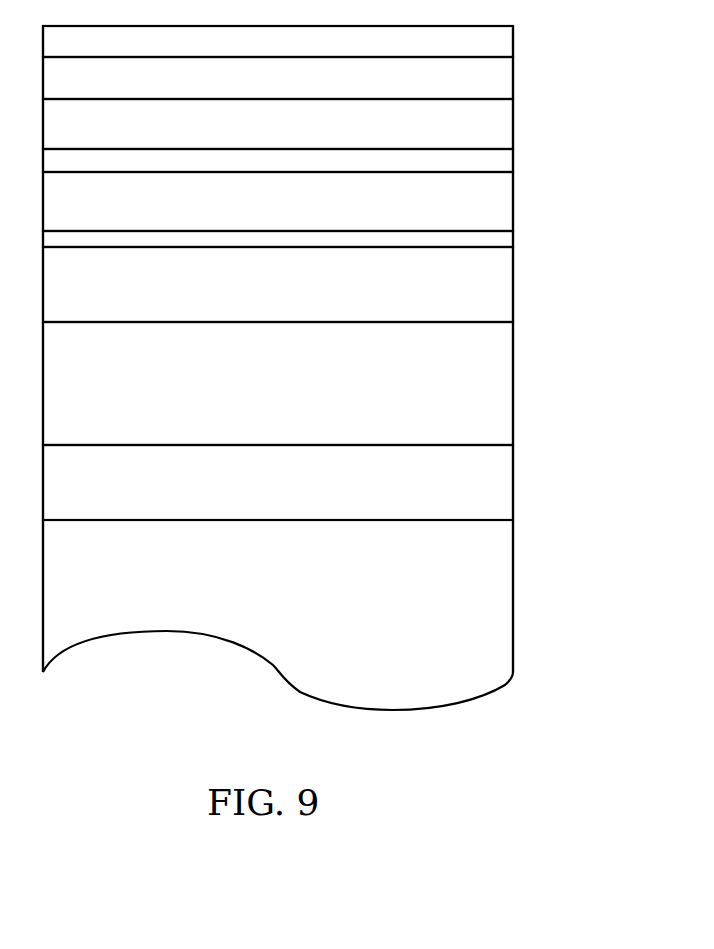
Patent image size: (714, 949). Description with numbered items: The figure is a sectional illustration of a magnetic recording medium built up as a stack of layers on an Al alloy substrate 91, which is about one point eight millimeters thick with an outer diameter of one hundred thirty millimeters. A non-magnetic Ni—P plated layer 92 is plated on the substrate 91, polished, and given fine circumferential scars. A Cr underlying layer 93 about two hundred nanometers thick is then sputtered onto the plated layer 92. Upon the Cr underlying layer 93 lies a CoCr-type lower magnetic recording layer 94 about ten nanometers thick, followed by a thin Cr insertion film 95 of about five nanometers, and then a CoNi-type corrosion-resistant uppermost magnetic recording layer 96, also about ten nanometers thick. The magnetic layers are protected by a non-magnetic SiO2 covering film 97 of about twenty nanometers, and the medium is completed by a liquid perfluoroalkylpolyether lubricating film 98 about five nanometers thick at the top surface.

The Al alloy substrate 91 is at (513, 603).
The Ni—P plated layer 92 is at (513, 491).
The Cr underlying layer 93 is at (513, 368).
The CoCr-type magnetic film 94 is at (513, 193).
The Cr insertion film 95 is at (513, 157).
The CoNi-type corrosion-resistant uppermost magnetic recording layer 96 is at (513, 133).
The non-magnetic covering film 97 is at (513, 72).
The lubricating film 98 is at (513, 42).